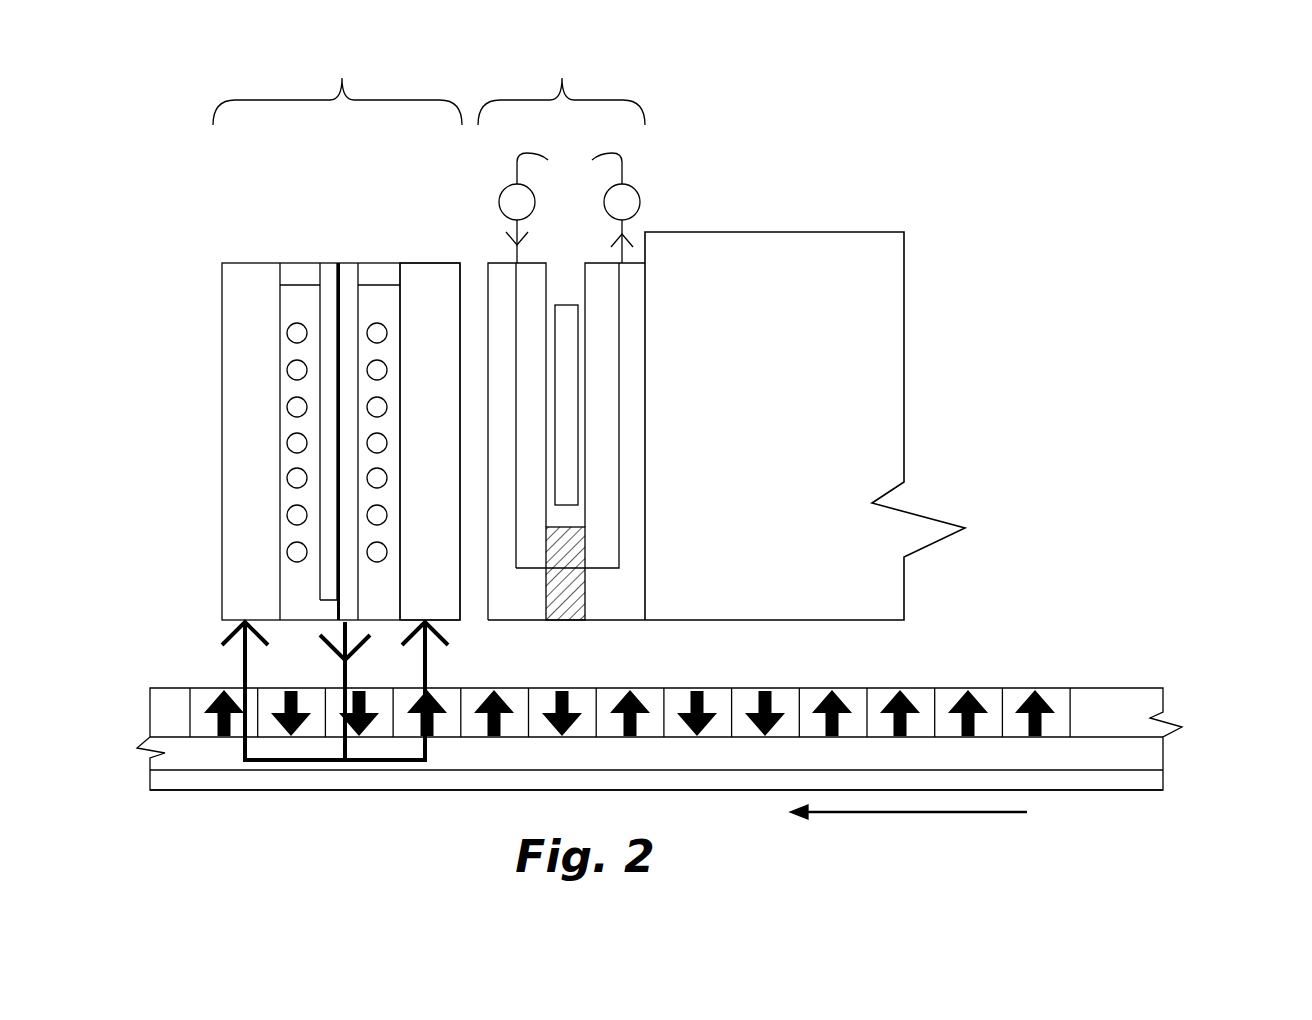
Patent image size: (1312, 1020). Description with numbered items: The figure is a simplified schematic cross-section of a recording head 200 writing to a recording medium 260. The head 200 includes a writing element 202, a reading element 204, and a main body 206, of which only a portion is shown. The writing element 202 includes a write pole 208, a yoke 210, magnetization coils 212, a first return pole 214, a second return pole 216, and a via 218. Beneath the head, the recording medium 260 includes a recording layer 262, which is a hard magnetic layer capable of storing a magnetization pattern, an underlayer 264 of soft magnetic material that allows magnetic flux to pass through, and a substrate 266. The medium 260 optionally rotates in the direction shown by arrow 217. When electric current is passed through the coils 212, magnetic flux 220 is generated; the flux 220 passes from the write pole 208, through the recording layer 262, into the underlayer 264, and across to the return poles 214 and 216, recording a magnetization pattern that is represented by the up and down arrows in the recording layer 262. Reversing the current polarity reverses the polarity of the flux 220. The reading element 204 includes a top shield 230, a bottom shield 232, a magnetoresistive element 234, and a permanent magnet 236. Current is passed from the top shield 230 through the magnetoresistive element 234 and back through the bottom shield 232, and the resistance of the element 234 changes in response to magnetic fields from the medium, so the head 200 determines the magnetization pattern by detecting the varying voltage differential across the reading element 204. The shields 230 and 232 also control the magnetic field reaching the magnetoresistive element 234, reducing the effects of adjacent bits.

The recording head 200 is at (790, 168).
The writing element 202 is at (403, 100).
The reading element 204 is at (605, 100).
The main body 206 is at (795, 247).
The write pole 208 is at (352, 270).
The yoke 210 is at (327, 265).
The magnetization coils 212 is at (295, 410).
The first return pole 214 is at (248, 352).
The second return pole 216 is at (423, 278).
The arrow 217 is at (923, 813).
The via 218 is at (285, 270).
The magnetic flux 220 is at (243, 670).
The top shield 230 is at (508, 613).
The bottom shield 232 is at (625, 613).
The magnetoresistive element 234 is at (553, 613).
The permanent magnet 236 is at (567, 315).
The recording medium 260 is at (138, 717).
The recording layer 262 is at (1157, 705).
The underlayer 264 is at (1158, 758).
The substrate 266 is at (1162, 782).